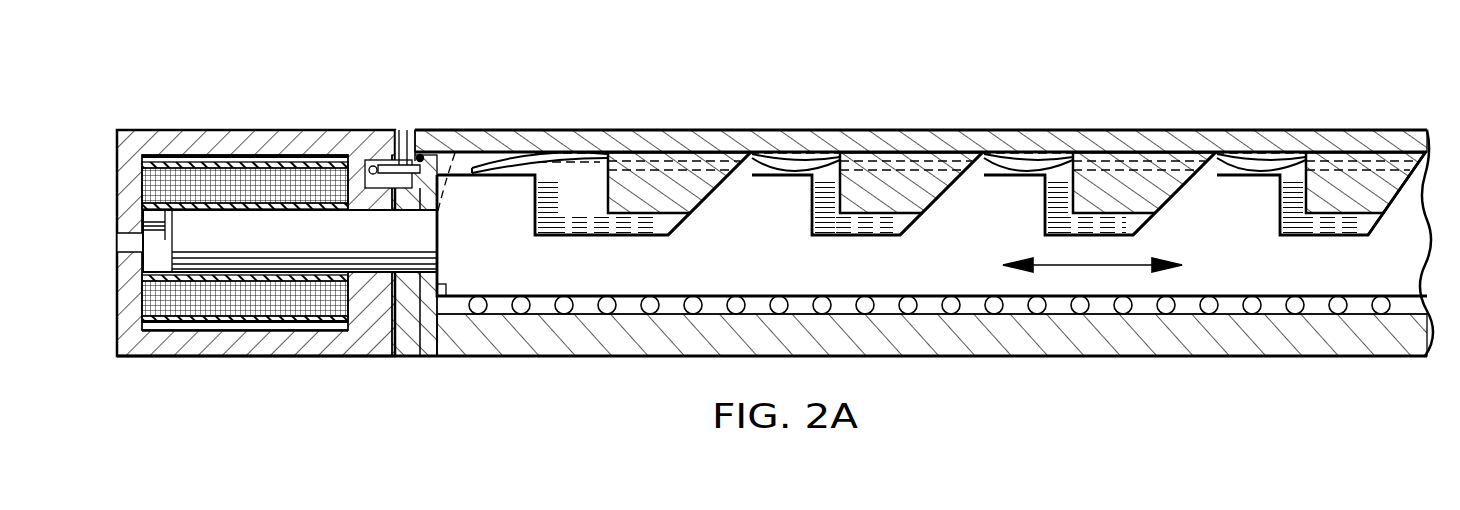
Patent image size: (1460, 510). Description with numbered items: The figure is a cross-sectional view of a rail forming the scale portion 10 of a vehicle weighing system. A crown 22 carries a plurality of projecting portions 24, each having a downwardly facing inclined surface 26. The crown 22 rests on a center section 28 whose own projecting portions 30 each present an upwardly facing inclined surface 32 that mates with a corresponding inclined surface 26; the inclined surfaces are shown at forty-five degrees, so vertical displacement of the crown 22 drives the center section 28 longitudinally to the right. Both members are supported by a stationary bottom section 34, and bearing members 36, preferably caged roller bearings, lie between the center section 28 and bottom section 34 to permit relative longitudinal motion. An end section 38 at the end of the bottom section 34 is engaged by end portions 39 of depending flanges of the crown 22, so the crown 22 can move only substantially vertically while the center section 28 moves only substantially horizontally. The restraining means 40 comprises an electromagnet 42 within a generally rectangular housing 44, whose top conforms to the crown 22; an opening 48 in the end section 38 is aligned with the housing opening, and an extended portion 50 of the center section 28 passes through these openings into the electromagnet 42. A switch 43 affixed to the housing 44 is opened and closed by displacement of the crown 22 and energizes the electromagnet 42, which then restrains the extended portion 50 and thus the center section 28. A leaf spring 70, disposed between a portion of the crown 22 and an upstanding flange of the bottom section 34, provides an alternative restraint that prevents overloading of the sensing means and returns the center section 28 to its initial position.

The scale portion 10 is at (884, 122).
The crown 22 is at (1118, 130).
The projecting portion 24 is at (650, 205).
The downwardly facing inclined surface 26 is at (697, 195).
The center section 28 is at (770, 269).
The projecting portion 30 is at (777, 185).
The upwardly facing inclined surface 32 is at (698, 152).
The bottom section 34 is at (618, 340).
The bearing members 36 is at (1292, 298).
The end section 38 is at (420, 198).
The end portions 39 is at (440, 290).
The restraining means 40 is at (192, 120).
The electromagnet 42 is at (243, 322).
The switch 43 is at (404, 158).
The housing 44 is at (287, 128).
The opening 48 is at (419, 357).
The extended portion 50 is at (275, 243).
The leaf spring 70 is at (585, 170).